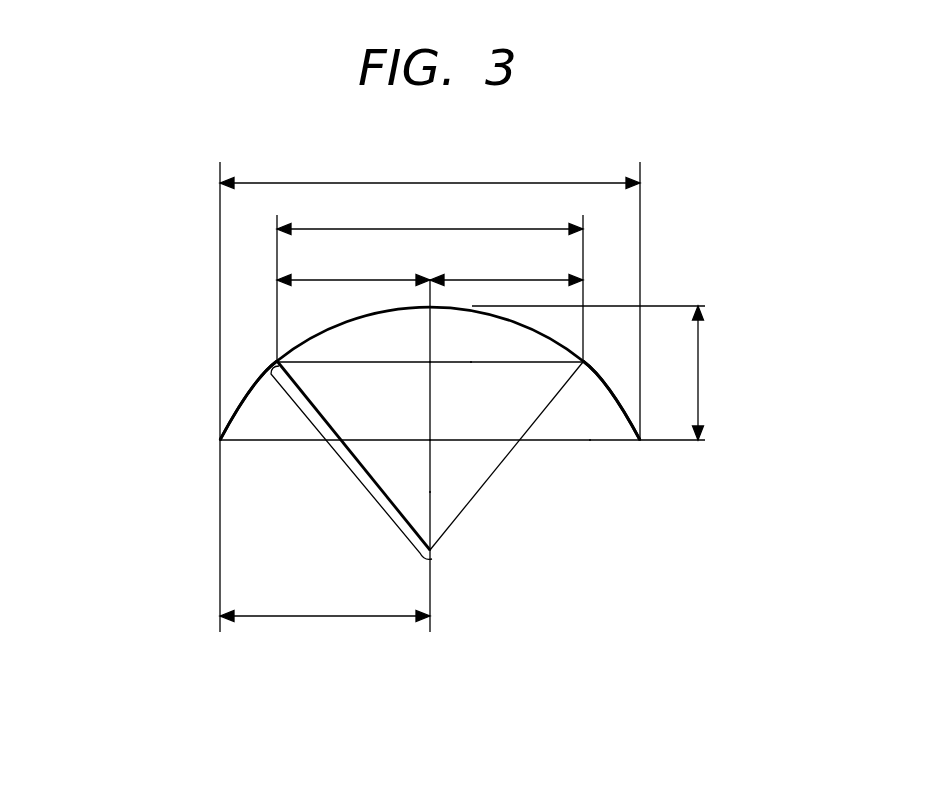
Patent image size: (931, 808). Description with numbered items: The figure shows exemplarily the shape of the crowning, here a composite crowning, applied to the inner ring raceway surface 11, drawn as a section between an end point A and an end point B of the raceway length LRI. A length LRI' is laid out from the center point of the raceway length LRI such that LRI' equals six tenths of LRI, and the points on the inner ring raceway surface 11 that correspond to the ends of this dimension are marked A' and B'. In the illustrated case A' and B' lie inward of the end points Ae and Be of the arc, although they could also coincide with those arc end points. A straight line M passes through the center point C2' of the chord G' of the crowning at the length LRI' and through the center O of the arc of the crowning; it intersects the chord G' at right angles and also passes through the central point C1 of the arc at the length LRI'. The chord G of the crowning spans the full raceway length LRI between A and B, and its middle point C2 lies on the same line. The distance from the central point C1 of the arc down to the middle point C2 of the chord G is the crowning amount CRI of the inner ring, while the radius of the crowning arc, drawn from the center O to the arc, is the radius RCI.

The inner ring raceway surface 11 is at (318, 326).
The end point A is at (179, 423).
The point A' is at (229, 340).
The end point Ae of the arc Ae is at (241, 373).
The end point B is at (624, 486).
The point B' is at (609, 337).
The end point Be of the arc Be is at (623, 386).
The central point C1 of the arc C1 is at (441, 319).
The middle point C2 of chord G C2 is at (485, 476).
The center point C2' of chord G' C2' is at (396, 389).
The chord G is at (574, 480).
The chord G' is at (492, 398).
The straight line M is at (447, 498).
The center O of the arc O is at (446, 560).
The radius of the crowning arc RCI is at (342, 459).
The crowning amount CRI is at (722, 373).
The raceway length LRI is at (430, 171).
The length LRI' is at (430, 217).